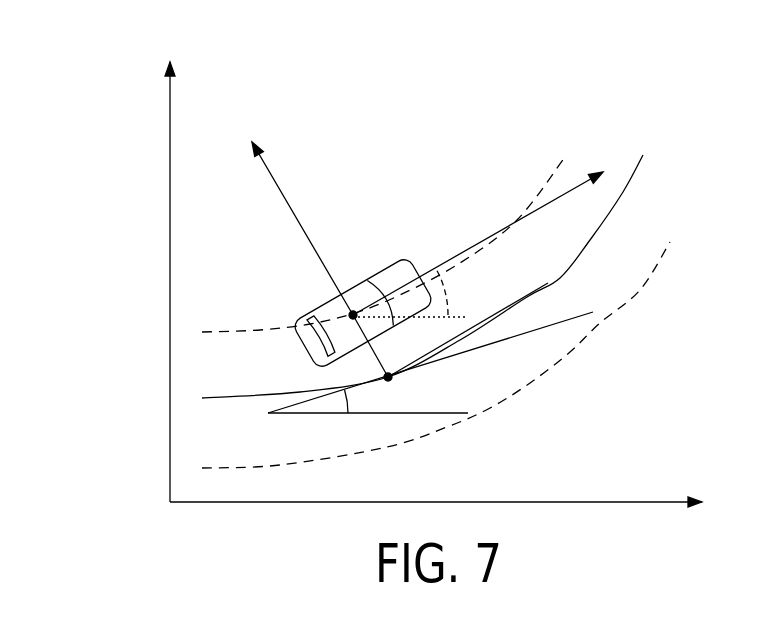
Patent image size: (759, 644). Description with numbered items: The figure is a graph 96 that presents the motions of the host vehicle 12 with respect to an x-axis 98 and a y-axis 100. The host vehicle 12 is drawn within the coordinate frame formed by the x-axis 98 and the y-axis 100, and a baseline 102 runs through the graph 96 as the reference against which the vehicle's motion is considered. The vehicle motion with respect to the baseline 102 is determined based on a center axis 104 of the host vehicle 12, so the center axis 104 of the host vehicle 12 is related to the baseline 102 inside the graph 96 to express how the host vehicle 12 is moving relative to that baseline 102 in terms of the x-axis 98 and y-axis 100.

The host vehicle 12 is at (303, 318).
The graph 96 is at (490, 172).
The x-axis 98 is at (300, 503).
The y-axis 100 is at (170, 285).
The baseline 102 is at (623, 192).
The center axis 104 is at (353, 311).